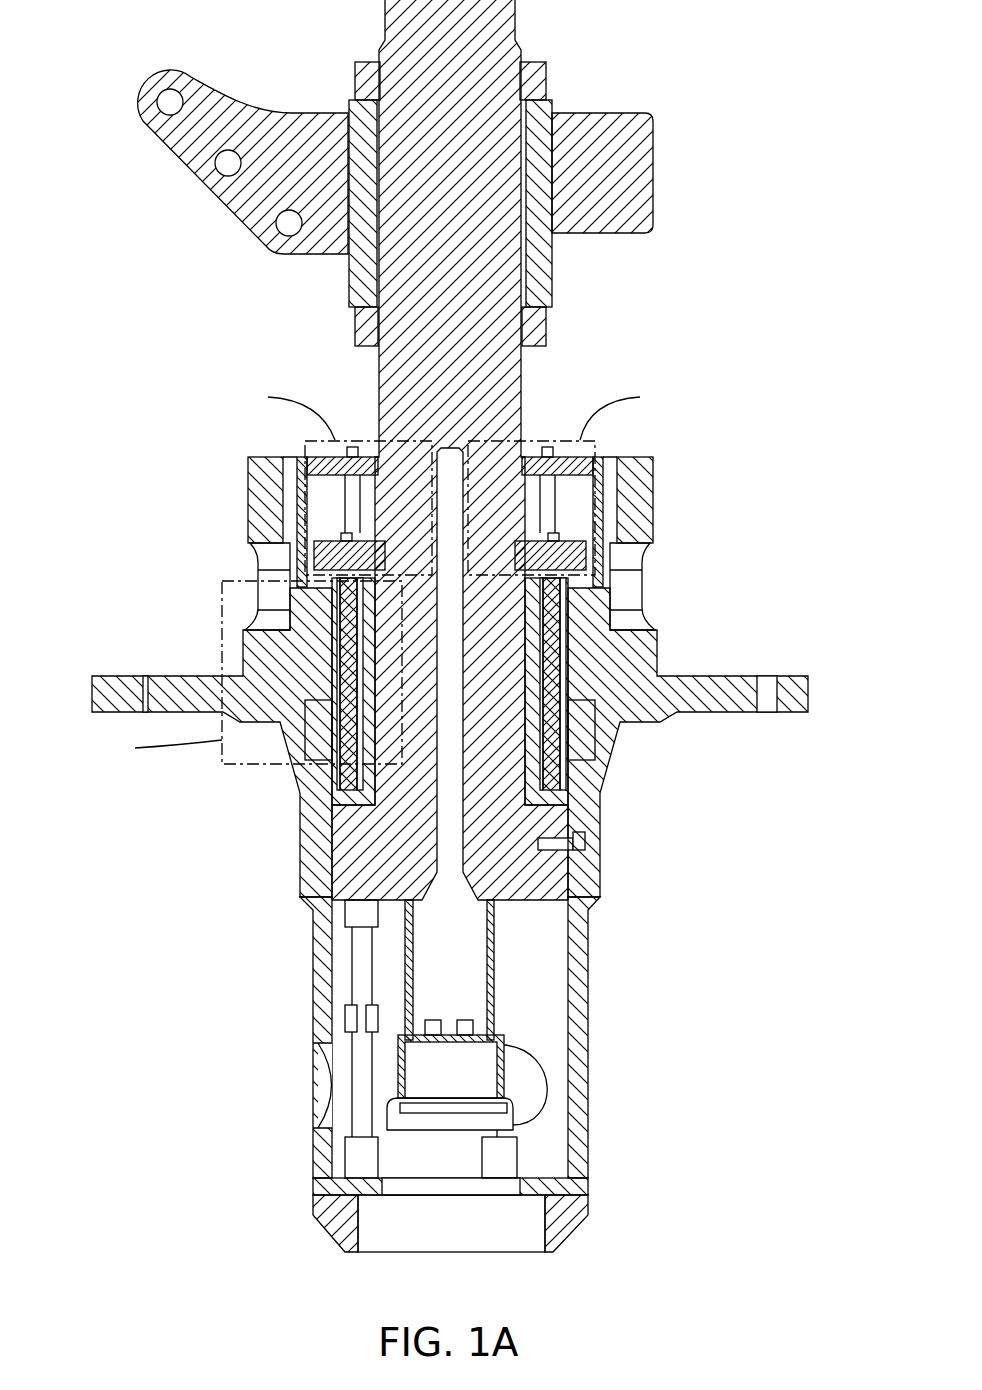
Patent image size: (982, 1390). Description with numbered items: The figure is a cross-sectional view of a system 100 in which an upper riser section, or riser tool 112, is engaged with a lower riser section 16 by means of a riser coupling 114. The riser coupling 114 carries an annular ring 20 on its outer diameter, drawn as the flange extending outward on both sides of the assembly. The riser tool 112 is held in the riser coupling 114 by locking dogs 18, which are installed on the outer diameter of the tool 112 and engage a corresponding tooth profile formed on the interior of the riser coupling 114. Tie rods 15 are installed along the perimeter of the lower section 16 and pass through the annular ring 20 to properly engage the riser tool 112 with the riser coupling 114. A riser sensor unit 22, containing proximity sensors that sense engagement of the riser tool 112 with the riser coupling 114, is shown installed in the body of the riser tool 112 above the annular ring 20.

The system 100 is at (439, 626).
The riser tool 112 is at (410, 43).
The riser coupling 114 is at (268, 490).
The riser sensor unit 22 is at (290, 617).
The annular ring 20 is at (245, 690).
The locking dogs 18 is at (320, 730).
The tie rods 15 is at (560, 615).
The lower riser section 16 is at (580, 1012).